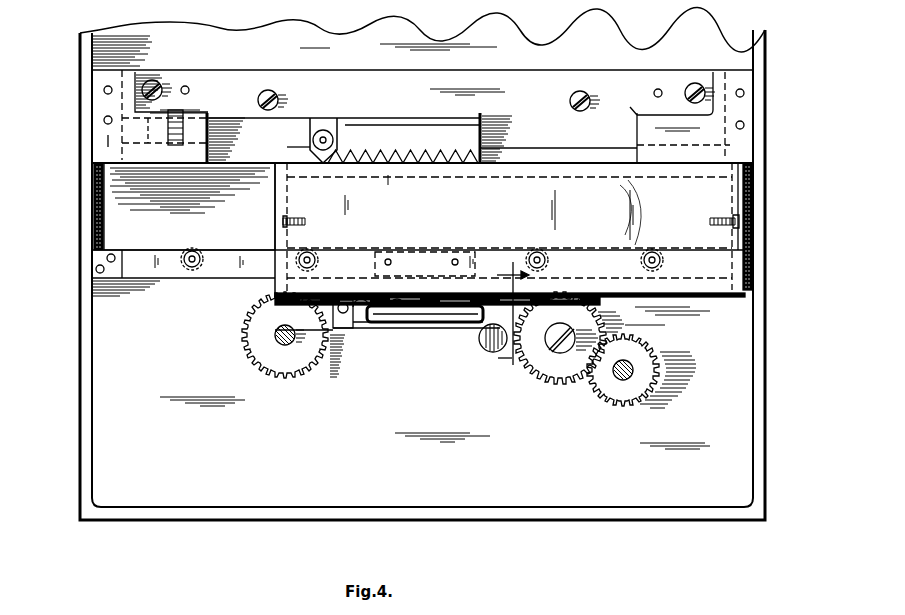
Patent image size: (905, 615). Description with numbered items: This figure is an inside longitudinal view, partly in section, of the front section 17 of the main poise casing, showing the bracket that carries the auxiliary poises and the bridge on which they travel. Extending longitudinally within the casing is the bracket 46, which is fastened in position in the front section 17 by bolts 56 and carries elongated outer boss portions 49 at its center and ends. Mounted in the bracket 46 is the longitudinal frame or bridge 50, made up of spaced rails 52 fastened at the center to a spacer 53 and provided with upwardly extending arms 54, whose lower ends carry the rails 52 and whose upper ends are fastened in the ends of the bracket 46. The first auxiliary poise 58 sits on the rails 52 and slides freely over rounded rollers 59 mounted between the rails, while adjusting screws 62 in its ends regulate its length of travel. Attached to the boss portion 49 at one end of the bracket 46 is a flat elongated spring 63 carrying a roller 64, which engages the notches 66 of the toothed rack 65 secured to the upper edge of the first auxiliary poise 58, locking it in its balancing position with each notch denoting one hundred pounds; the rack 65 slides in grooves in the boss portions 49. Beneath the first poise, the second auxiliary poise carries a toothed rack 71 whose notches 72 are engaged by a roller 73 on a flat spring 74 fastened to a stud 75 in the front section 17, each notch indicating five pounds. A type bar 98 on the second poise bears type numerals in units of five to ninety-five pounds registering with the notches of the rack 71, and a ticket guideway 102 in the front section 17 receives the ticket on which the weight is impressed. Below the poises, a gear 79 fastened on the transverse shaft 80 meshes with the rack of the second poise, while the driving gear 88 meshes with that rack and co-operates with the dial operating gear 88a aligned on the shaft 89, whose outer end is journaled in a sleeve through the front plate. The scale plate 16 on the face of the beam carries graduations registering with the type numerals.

The front section 17 is at (605, 520).
The bracket 46 is at (103, 99).
The bolts 56 is at (155, 81).
The outer boss portions 49 is at (182, 150).
The flat elongated spring 63 is at (234, 117).
The roller 64 is at (329, 148).
The notches 66 is at (358, 150).
The toothed rack 65 is at (305, 157).
The upwardly extending arms 54 is at (92, 203).
The first auxiliary poise 58 is at (318, 195).
The frame or bridge 50 is at (92, 255).
The rails 52 is at (161, 268).
The spacer 53 is at (403, 258).
The rollers 59 is at (190, 250).
The adjusting screws 62 is at (283, 221).
The type bar 98 is at (600, 303).
The notches 72 is at (358, 330).
The toothed rack 71 is at (388, 330).
The ticket guideway 102 is at (428, 330).
The flat spring 74 is at (452, 330).
The roller 73 is at (333, 325).
The stud 75 is at (505, 353).
The scale plate 16 is at (499, 318).
The gear 79 is at (246, 346).
The shaft 80 is at (283, 345).
The driving gear 88 is at (563, 384).
The dial operating gear 88a is at (618, 405).
The shaft 89 is at (640, 370).